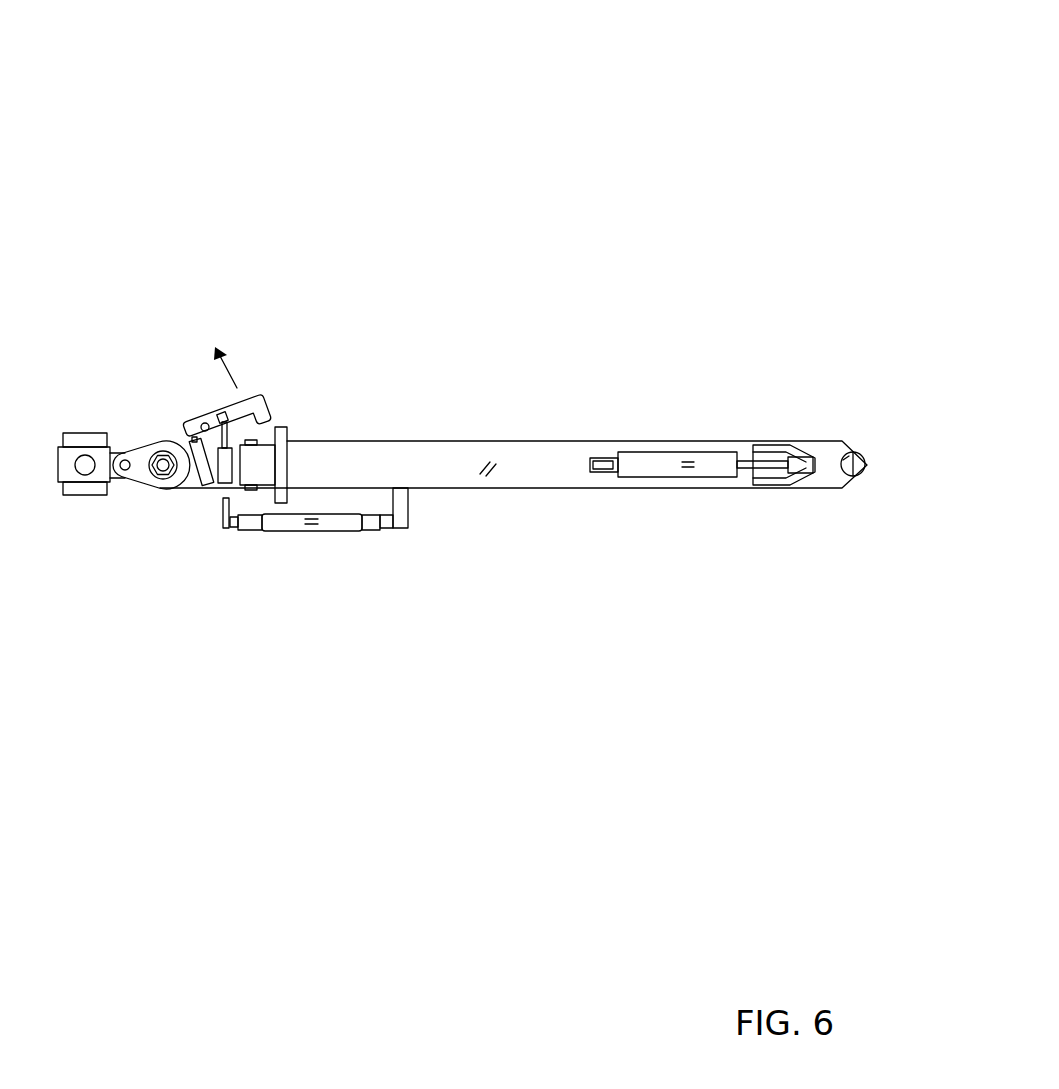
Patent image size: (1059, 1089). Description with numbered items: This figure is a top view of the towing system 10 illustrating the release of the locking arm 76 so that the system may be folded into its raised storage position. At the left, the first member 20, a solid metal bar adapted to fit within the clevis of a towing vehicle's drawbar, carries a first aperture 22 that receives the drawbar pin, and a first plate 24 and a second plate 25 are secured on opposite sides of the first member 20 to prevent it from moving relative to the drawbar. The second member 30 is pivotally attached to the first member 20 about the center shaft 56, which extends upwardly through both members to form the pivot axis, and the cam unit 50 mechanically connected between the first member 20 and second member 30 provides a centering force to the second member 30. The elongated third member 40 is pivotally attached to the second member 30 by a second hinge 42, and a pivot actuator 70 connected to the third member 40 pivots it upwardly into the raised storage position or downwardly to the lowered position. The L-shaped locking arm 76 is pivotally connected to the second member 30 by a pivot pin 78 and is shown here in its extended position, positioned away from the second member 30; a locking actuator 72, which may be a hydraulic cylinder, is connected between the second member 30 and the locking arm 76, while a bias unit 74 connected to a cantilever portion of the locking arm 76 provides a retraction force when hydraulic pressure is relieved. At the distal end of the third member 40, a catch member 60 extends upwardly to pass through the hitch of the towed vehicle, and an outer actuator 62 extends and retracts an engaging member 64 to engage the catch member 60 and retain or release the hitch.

The towing system 10 is at (658, 132).
The first member 20 is at (117, 479).
The first aperture 22 is at (75, 457).
The first plate 24 is at (73, 494).
The second plate 25 is at (96, 445).
The second member 30 is at (197, 488).
The third member 40 is at (478, 441).
The second hinge 42 is at (251, 439).
The cam unit 50 is at (146, 422).
The center shaft 56 is at (163, 465).
The catch member 60 is at (848, 455).
The outer actuator 62 is at (650, 463).
The engaging member 64 is at (818, 465).
The pivot actuator 70 is at (313, 530).
The locking actuator 72 is at (223, 478).
The bias unit 74 is at (183, 488).
The locking arm 76 is at (265, 399).
The pivot pin 78 is at (185, 428).